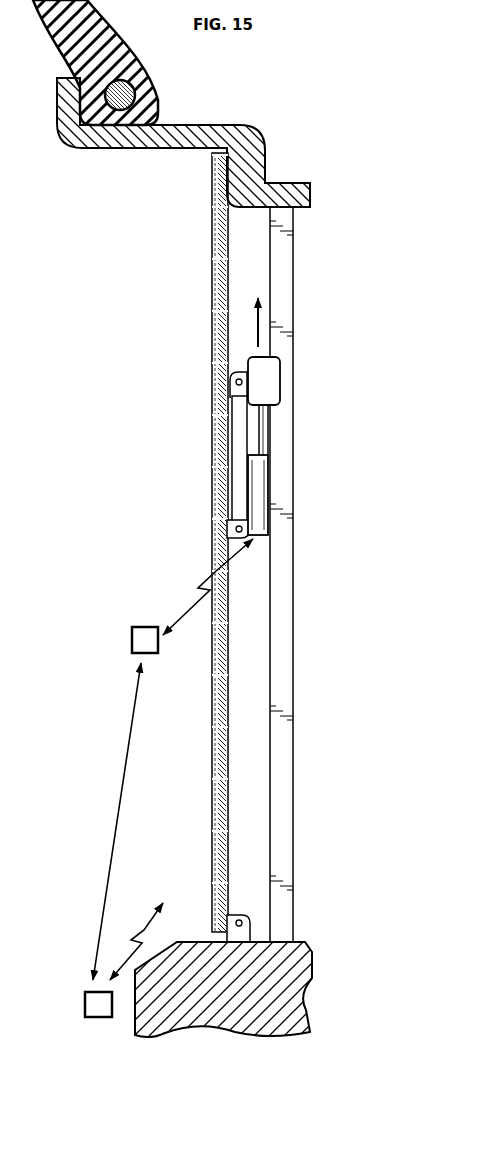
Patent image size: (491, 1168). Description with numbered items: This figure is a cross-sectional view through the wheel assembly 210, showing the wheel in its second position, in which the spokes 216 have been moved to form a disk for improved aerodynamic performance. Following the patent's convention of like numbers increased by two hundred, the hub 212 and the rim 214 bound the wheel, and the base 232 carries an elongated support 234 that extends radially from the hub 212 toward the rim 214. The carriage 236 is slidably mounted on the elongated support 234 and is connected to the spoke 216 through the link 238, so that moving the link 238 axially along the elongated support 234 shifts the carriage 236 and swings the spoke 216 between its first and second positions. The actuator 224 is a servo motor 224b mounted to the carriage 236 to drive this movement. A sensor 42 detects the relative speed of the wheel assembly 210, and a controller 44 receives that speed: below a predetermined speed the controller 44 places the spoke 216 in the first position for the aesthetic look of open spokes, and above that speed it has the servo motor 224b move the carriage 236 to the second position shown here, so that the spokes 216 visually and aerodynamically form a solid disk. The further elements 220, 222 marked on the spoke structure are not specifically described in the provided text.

The wheel assembly 210 is at (209, 595).
The hub 212 is at (190, 950).
The rim 214 is at (238, 127).
The spoke 216 is at (209, 547).
The panel core 220 is at (212, 480).
The panel skin 222 is at (175, 542).
The actuator 224 is at (319, 470).
The servo motor 224b is at (260, 487).
The base 232 is at (303, 636).
The elongated support 234 is at (291, 325).
The carriage 236 is at (280, 375).
The link 238 is at (237, 402).
The sensor 42 is at (100, 1005).
The controller 44 is at (143, 637).